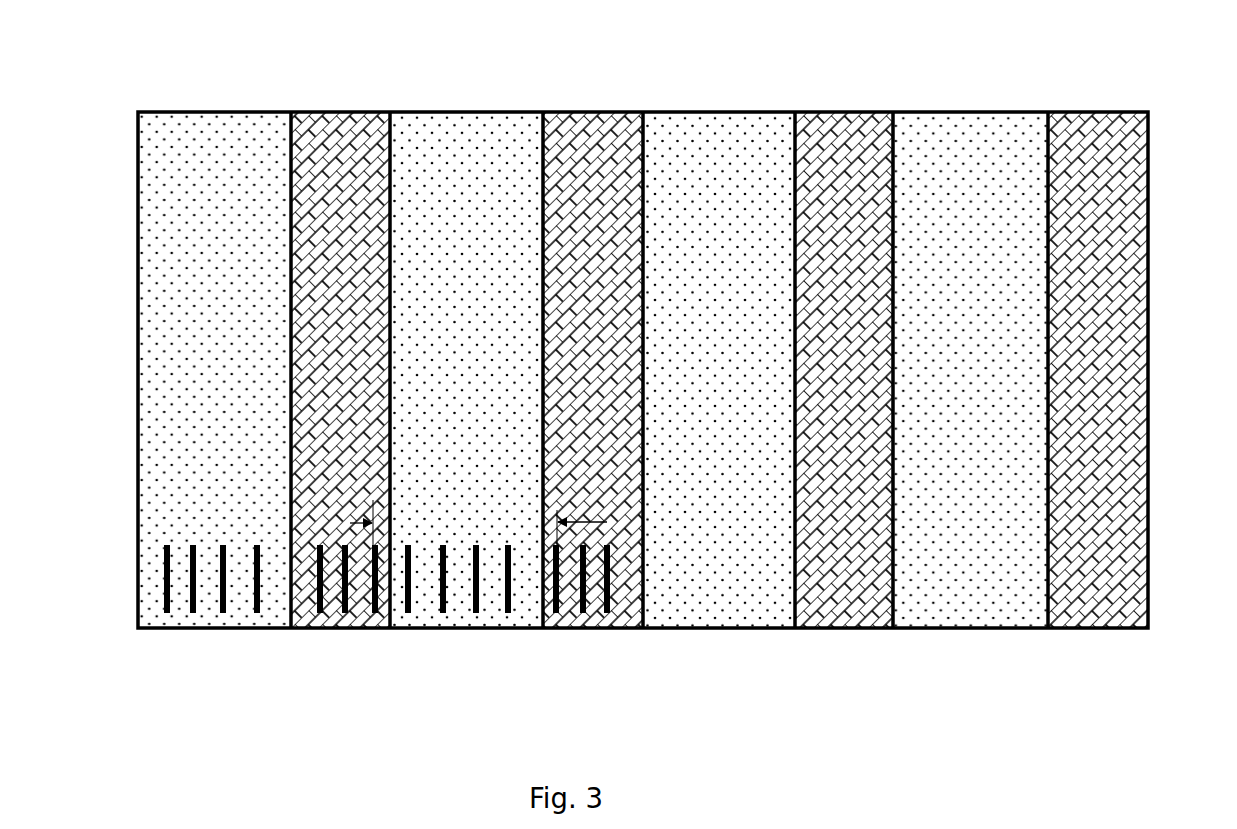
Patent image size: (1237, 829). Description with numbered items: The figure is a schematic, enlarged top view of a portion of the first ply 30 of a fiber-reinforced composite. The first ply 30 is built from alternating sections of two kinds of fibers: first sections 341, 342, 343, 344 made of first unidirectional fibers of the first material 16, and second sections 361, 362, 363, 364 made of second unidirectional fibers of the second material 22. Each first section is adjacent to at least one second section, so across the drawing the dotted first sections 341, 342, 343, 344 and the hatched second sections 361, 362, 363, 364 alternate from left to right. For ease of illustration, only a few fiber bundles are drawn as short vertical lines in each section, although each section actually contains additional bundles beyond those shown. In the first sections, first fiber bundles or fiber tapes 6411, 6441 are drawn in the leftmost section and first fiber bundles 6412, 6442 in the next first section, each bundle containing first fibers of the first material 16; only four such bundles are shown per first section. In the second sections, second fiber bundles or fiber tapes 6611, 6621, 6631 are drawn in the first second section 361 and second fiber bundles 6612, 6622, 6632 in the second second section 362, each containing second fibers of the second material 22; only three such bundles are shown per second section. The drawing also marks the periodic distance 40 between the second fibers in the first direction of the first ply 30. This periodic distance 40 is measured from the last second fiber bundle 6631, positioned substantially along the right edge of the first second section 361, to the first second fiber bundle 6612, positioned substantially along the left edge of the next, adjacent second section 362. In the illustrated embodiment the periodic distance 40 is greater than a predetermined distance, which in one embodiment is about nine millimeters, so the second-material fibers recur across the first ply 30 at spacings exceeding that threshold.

The first ply 30 is at (1163, 166).
The first material 16 is at (478, 92).
The second material 22 is at (589, 92).
The periodic distance 40 is at (478, 522).
The first section 341 is at (205, 140).
The first section 342 is at (466, 345).
The first section 343 is at (722, 140).
The first section 344 is at (977, 140).
The second section 361 is at (336, 140).
The second section 362 is at (593, 345).
The second section 363 is at (858, 140).
The second section 364 is at (1098, 140).
The first fiber bundle 6411 is at (167, 613).
The first fiber bundle 6441 is at (257, 613).
The first fiber bundle 6412 is at (408, 615).
The first fiber bundle 6442 is at (508, 615).
The second fiber bundle 6611 is at (320, 615).
The second fiber bundle 6621 is at (345, 615).
The second fiber bundle 6631 is at (375, 615).
The second fiber bundle 6612 is at (558, 615).
The second fiber bundle 6622 is at (585, 615).
The second fiber bundle 6632 is at (609, 615).